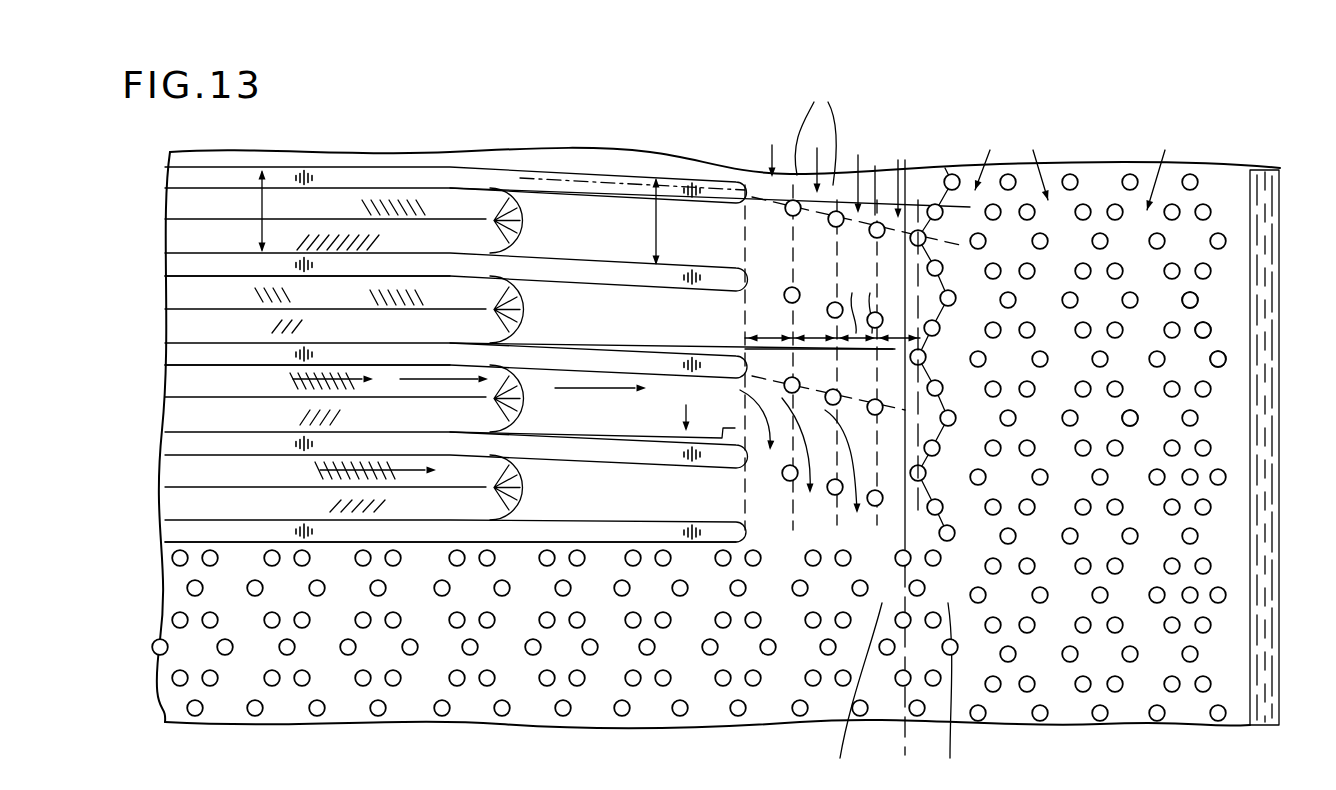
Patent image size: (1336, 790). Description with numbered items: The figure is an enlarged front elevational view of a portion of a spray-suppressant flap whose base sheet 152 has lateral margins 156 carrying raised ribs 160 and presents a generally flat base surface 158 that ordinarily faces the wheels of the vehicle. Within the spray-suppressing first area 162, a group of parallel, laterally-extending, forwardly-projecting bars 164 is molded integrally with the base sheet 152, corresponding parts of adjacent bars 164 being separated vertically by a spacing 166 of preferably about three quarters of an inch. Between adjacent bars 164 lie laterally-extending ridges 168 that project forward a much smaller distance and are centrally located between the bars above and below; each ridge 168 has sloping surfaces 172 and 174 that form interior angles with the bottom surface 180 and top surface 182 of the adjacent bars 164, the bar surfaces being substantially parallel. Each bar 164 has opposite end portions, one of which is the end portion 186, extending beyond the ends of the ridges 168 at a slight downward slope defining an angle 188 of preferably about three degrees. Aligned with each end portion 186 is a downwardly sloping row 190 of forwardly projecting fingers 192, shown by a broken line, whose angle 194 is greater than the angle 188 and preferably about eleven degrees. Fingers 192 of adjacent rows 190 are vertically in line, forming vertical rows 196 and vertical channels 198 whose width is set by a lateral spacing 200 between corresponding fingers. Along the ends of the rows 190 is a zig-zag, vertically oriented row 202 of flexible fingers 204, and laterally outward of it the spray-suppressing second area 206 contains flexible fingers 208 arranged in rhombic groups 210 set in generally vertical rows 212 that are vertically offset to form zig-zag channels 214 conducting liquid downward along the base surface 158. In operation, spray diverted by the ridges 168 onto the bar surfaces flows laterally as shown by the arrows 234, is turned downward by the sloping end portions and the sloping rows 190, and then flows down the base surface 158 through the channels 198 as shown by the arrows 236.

The base sheet 152 is at (578, 153).
The lateral margins 156 is at (1281, 272).
The base surface 158 is at (582, 506).
The raised ribs 160 is at (1268, 395).
The first area 162 is at (862, 678).
The bars 164 is at (368, 180).
The spacing 166 is at (262, 210).
The ridges 168 is at (523, 236).
The sloping surface 172 is at (316, 218).
The sloping surface 174 is at (316, 336).
The bottom surface 180 is at (232, 368).
The top surface 182 is at (240, 339).
The end portion 186 is at (586, 190).
The angle 188 is at (596, 421).
The row of fingers 190 is at (748, 214).
The fingers 192 is at (800, 214).
The angle of slope 194 is at (836, 372).
The vertical rows 196 is at (844, 148).
The vertical channels 198 is at (836, 170).
The lateral spacing 200 is at (785, 330).
The zig-zag row 202 is at (950, 174).
The flexible fingers 204 is at (929, 288).
The second area 206 is at (940, 474).
The flexible fingers 208 is at (1197, 302).
The rhombic groups 210 is at (1138, 421).
The vertical rows 212 is at (1005, 715).
The zig-zag channels 214 is at (1098, 425).
The arrows 234 is at (400, 463).
The arrows 236 is at (768, 425).